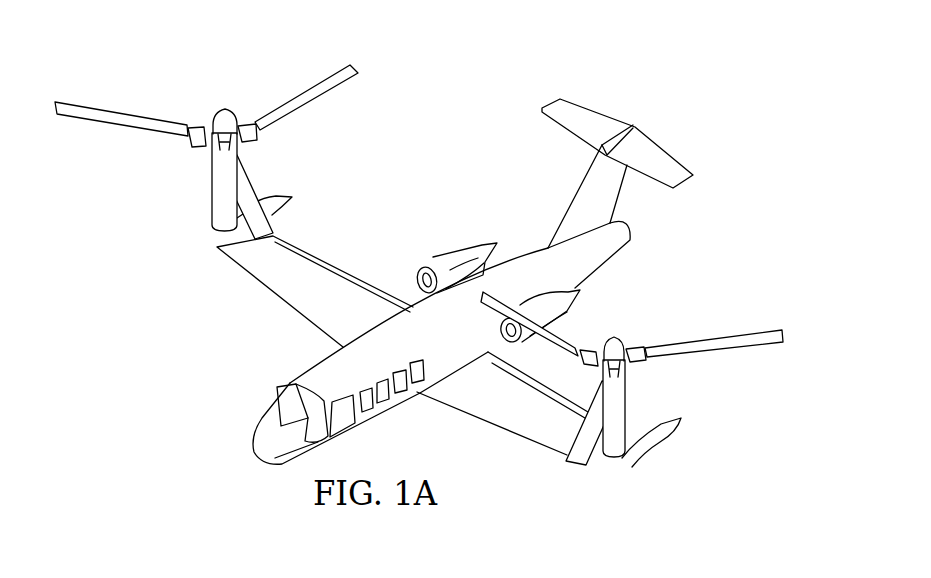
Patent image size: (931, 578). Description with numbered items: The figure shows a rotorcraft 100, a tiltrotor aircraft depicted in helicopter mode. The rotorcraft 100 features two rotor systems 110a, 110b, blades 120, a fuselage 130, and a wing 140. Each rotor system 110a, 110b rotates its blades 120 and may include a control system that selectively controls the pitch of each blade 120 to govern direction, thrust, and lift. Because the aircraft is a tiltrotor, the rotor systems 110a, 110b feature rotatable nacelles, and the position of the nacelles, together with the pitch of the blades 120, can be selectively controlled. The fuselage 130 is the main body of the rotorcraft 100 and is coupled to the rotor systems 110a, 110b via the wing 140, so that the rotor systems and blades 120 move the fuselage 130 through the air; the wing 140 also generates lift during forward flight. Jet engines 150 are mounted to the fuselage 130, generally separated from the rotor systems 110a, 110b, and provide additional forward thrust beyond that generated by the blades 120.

The rotorcraft 100 is at (670, 132).
The rotor system 110a is at (203, 192).
The rotor system 110b is at (653, 458).
The blades 120 is at (297, 94).
The fuselage 130 is at (250, 443).
The wing 140 is at (327, 260).
The jet engines 150 is at (440, 253).